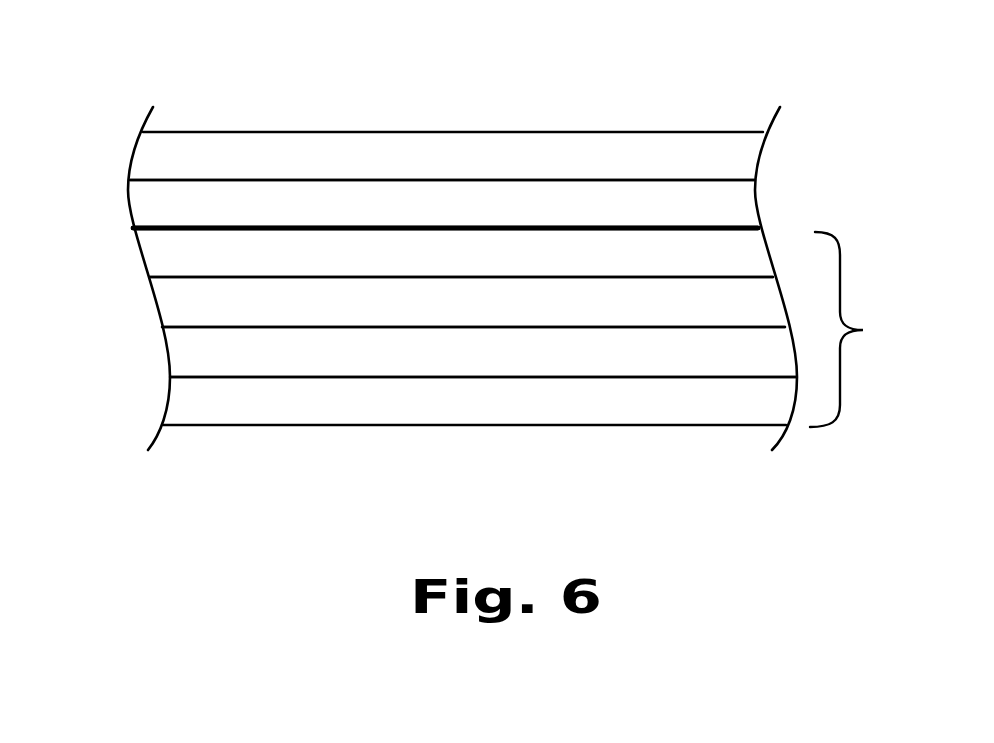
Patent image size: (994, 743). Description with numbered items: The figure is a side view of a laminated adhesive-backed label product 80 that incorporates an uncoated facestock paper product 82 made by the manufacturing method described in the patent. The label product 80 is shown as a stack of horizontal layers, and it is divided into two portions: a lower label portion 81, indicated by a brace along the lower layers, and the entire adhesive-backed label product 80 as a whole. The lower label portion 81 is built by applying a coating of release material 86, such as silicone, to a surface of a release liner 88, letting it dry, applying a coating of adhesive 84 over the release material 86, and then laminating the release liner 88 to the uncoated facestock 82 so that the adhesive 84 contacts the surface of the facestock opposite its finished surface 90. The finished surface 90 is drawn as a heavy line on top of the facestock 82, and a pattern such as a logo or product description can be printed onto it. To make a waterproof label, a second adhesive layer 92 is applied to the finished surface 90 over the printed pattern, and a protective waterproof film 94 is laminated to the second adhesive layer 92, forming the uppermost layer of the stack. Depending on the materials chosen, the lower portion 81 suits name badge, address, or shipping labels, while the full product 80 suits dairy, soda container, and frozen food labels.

The laminated adhesive-backed label product 80 is at (325, 62).
The lower label portion 81 is at (860, 329).
The uncoated facestock paper product 82 is at (452, 268).
The adhesive 84 is at (450, 313).
The release material 86 is at (450, 366).
The release liner 88 is at (450, 415).
The finished surface 90 is at (166, 205).
The second adhesive layer 92 is at (452, 218).
The protective waterproof film 94 is at (452, 169).